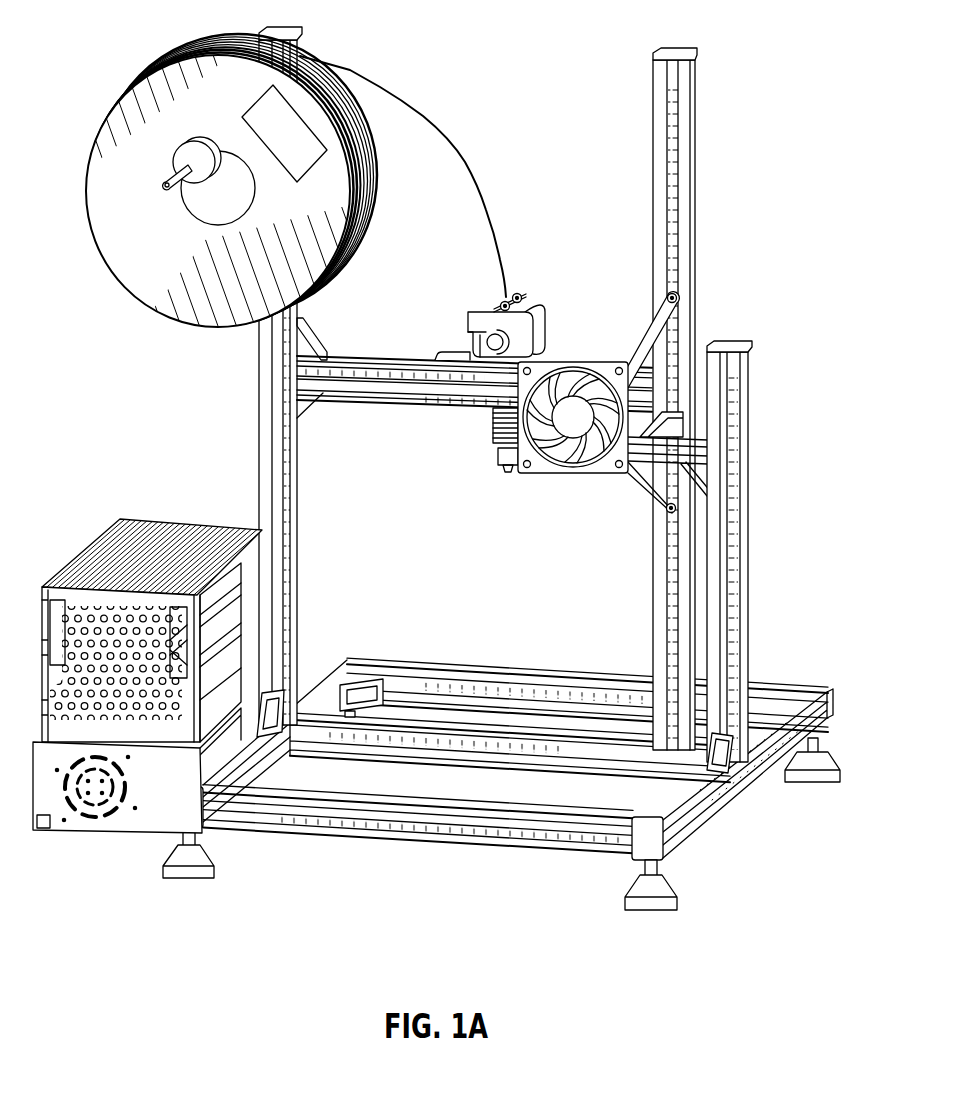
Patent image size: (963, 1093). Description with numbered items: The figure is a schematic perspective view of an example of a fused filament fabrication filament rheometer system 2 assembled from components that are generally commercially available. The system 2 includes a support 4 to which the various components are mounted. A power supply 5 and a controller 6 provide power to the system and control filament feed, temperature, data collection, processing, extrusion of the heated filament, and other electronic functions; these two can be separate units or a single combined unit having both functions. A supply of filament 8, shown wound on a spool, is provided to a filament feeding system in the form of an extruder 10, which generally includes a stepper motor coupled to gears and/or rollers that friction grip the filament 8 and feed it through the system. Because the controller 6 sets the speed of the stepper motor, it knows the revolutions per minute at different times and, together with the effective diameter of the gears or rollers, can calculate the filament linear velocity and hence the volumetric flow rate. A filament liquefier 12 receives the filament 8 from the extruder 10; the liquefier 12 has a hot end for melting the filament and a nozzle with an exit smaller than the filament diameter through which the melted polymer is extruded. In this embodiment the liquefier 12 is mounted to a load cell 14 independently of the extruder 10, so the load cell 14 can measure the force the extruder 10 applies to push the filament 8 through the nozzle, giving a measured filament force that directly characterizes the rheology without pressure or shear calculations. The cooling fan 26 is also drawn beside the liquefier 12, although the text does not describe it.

The system 2 is at (792, 513).
The support 4 is at (748, 447).
The power supply 5 is at (135, 825).
The controller 6 is at (172, 527).
The filament 8 is at (464, 162).
The extruder 10 is at (508, 300).
The filament liquefier 12 is at (498, 432).
The load cell 14 is at (640, 387).
The cooling fan 26 is at (562, 452).